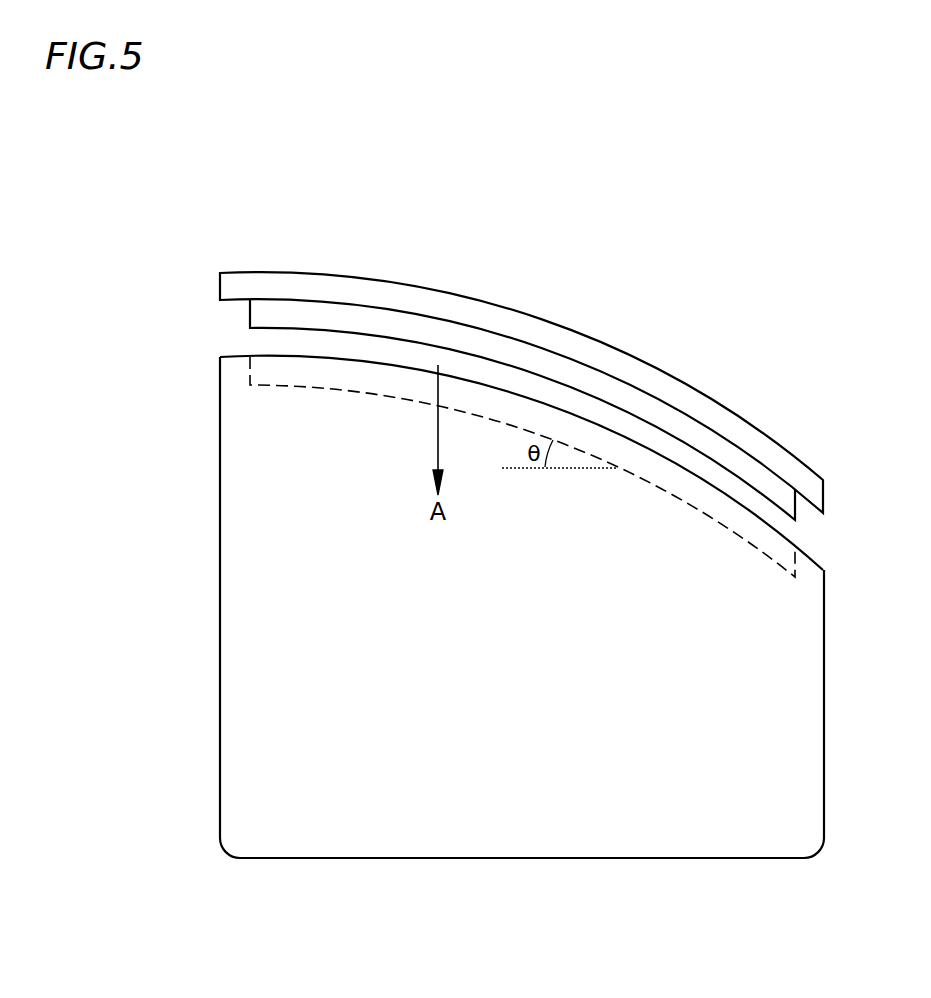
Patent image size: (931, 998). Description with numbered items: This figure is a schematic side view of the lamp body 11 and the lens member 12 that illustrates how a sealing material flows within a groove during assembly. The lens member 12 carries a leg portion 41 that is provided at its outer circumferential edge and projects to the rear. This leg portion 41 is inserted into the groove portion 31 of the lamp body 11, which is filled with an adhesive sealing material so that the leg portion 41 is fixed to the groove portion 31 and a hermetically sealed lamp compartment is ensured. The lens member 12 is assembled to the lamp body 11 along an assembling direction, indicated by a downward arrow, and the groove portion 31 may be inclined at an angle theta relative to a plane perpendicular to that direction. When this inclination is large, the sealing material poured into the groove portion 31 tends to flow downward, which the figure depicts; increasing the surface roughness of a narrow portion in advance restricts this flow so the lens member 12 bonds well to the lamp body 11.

The lamp body 11 is at (467, 827).
The lens member 12 is at (540, 327).
The groove portion 31 is at (280, 388).
The leg portion 41 is at (278, 318).